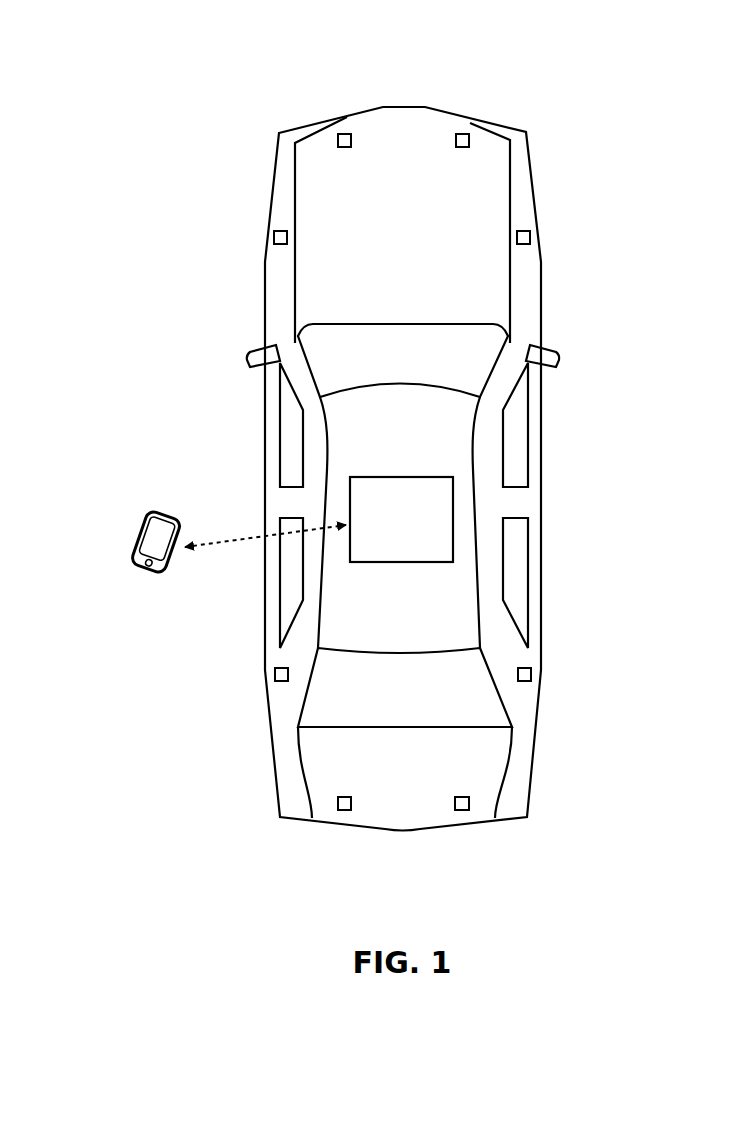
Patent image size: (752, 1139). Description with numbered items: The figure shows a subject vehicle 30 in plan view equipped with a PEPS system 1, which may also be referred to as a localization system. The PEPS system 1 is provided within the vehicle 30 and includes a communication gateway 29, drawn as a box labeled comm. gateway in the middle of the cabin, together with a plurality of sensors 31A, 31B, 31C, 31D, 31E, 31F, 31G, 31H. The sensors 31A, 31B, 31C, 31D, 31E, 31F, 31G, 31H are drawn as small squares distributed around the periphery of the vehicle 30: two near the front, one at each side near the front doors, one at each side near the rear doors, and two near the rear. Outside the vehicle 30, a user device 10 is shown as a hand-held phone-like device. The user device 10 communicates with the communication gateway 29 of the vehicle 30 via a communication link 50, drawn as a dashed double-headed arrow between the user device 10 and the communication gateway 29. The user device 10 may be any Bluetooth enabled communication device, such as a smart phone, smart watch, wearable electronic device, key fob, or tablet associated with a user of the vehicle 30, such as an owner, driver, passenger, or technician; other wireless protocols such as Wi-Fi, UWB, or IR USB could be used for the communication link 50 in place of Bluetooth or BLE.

The PEPS system 1 is at (114, 42).
The user device 10 is at (136, 540).
The communication gateway 29 is at (378, 477).
The vehicle 30 is at (532, 165).
The sensor 31A is at (344, 133).
The sensor 31B is at (274, 237).
The sensor 31C is at (275, 676).
The sensor 31D is at (345, 811).
The sensor 31E is at (464, 811).
The sensor 31F is at (532, 674).
The sensor 31G is at (530, 237).
The sensor 31H is at (462, 133).
The communication link 50 is at (238, 543).